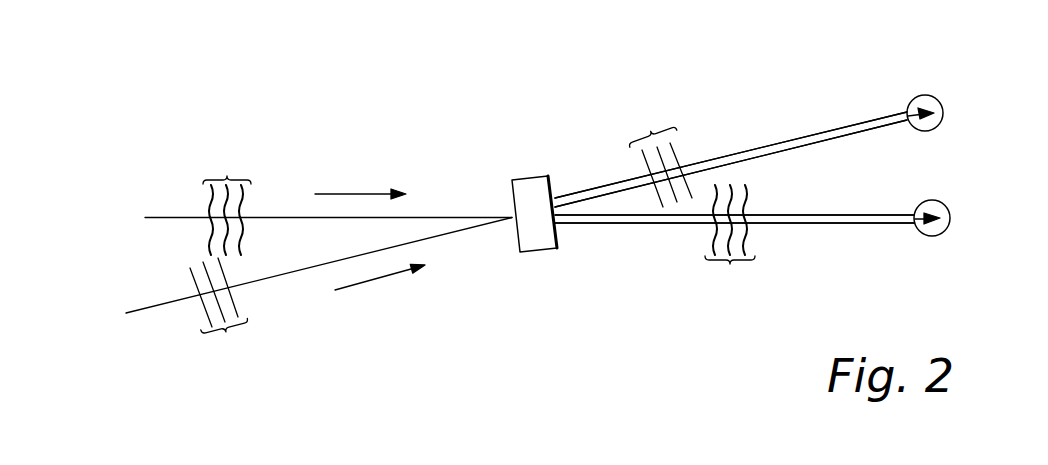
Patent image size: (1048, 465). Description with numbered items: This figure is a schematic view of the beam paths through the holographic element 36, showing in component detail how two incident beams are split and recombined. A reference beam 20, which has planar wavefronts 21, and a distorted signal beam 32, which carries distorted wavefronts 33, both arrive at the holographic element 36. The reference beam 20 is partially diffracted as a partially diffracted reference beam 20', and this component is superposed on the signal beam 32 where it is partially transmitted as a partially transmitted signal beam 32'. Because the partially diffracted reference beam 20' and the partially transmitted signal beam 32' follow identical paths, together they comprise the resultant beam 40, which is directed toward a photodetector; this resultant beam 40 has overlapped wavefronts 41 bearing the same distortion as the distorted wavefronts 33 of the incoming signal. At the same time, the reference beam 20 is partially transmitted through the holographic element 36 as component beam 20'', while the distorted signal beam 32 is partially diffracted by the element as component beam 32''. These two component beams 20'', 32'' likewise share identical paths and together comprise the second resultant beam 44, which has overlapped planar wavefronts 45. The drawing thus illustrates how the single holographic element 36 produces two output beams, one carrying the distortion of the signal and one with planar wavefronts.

The reference beam 20 is at (319, 280).
The planar wavefronts 21 is at (230, 337).
The distorted signal beam 32 is at (328, 174).
The distorted wavefronts 33 is at (228, 176).
The holographic element 36 is at (520, 252).
The partially diffracted reference beam 20' is at (734, 248).
The partially transmitted reference beam component 20'' is at (731, 159).
The partially transmitted signal beam 32' is at (751, 186).
The partially diffracted signal beam component 32'' is at (731, 139).
The resultant beam 40 is at (940, 236).
The overlapped wavefronts 41 is at (730, 266).
The resultant beam 44 is at (926, 95).
The overlapped planar wavefronts 45 is at (650, 130).